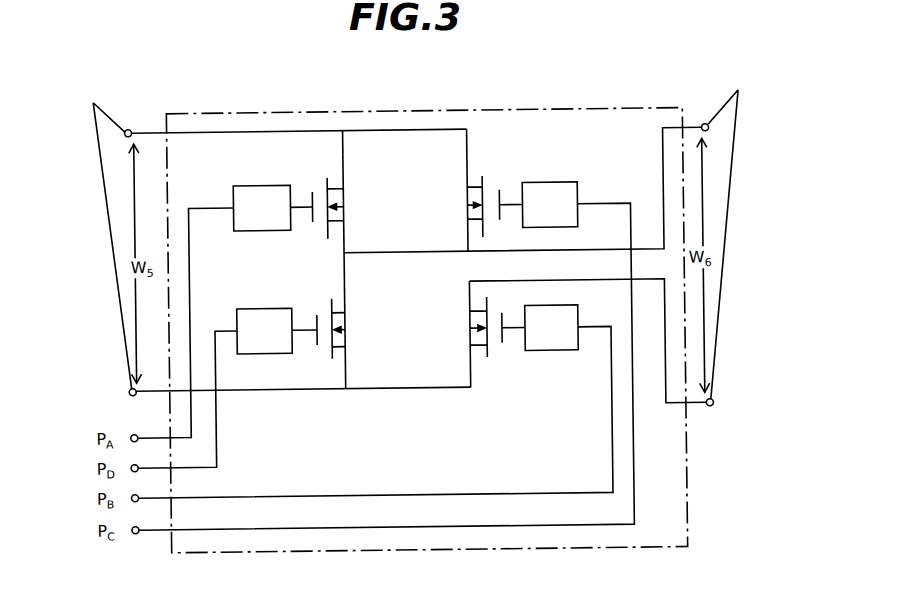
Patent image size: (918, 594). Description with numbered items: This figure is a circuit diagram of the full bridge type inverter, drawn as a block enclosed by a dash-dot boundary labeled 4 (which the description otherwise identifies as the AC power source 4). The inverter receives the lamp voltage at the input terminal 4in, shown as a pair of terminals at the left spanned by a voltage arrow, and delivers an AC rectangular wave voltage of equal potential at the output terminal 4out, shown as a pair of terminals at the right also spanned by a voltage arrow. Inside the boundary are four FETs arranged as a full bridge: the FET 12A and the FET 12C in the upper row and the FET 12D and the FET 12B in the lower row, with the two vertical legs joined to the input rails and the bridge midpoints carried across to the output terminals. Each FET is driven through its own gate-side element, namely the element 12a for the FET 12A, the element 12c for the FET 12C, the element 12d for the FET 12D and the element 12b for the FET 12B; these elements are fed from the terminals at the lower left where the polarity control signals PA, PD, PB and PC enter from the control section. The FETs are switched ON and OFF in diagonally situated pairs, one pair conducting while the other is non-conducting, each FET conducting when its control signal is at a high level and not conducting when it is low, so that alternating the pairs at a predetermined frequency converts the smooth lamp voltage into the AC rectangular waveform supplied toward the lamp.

The AC power source 4 is at (382, 112).
The input terminals 4in is at (110, 235).
The output terminals 4out is at (733, 237).
The drive circuit 12a is at (244, 181).
The FET 12A is at (319, 184).
The drive circuit 12b is at (557, 352).
The FET 12B is at (493, 346).
The drive circuit 12c is at (557, 182).
The FET 12C is at (497, 188).
The drive circuit 12d is at (255, 301).
The FET 12D is at (325, 311).